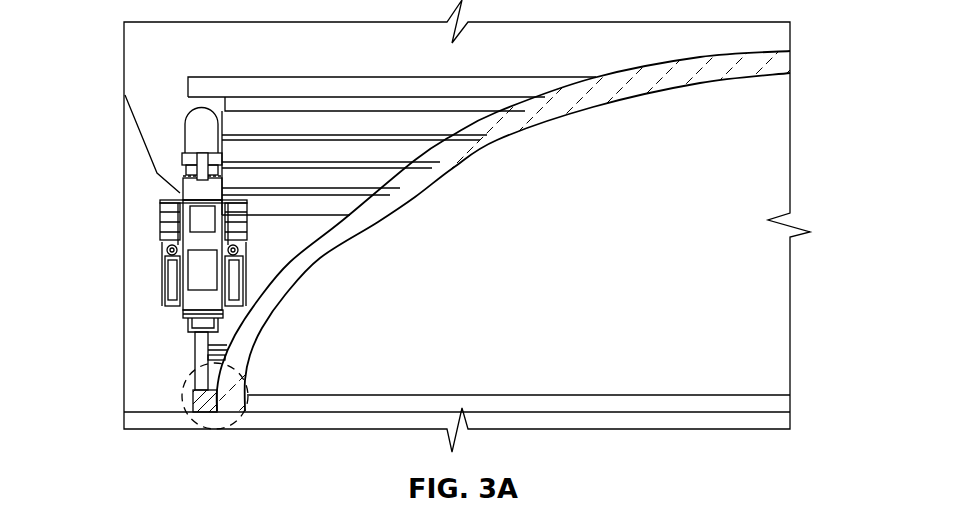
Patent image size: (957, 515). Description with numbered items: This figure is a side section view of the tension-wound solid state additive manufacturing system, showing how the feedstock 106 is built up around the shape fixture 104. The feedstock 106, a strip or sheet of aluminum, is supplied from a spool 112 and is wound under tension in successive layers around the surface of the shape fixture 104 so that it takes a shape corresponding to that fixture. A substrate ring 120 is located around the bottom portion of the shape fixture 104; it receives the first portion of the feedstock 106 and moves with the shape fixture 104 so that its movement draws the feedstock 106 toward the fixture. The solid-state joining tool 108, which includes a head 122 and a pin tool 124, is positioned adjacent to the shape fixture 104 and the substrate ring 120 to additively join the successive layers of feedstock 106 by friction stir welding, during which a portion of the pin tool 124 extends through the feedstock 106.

The shape fixture 104 is at (762, 161).
The feedstock 106 is at (292, 123).
The solid-state joining tool 108 is at (183, 140).
The spool 112 is at (373, 93).
The substrate ring 120 is at (203, 415).
The head 122 is at (165, 282).
The pin tool 124 is at (197, 367).